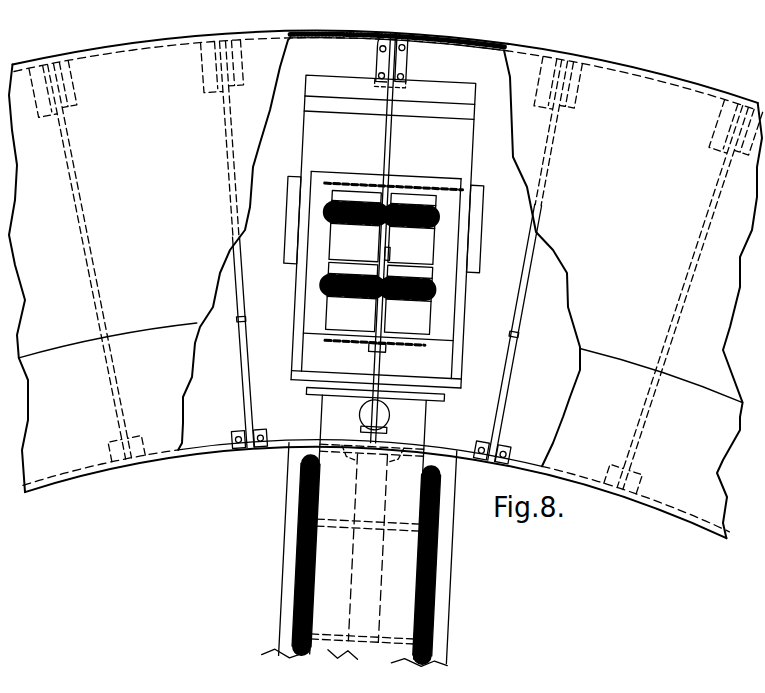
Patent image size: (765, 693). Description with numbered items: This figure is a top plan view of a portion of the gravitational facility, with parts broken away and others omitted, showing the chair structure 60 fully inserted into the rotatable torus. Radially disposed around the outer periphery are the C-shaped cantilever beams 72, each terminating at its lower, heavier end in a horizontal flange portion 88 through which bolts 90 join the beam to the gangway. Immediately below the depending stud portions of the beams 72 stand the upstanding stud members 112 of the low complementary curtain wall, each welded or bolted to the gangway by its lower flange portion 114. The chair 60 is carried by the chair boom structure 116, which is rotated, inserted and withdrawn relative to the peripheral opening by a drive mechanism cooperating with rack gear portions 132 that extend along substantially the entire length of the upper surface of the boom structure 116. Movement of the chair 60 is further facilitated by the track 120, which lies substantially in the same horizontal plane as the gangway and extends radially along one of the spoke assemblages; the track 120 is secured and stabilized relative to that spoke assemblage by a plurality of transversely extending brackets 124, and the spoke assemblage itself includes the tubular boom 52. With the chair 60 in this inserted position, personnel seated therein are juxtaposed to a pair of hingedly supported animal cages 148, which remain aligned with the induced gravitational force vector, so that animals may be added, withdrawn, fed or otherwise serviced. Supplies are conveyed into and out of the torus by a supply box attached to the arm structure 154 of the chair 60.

The tubular boom 52 is at (350, 597).
The chair structure 60 is at (459, 362).
The cantilever beam 72 is at (387, 143).
The horizontal flange portion 88 is at (410, 58).
The bolt 90 is at (381, 64).
The upstanding stud member 112 is at (500, 440).
The lower flange portion 114 is at (262, 431).
The chair boom structure 116 is at (415, 553).
The track 120 is at (447, 602).
The transversely extending bracket 124 is at (333, 522).
The rack gear portion 132 is at (432, 587).
The animal cage 148 is at (437, 292).
The arm structure 154 is at (481, 238).